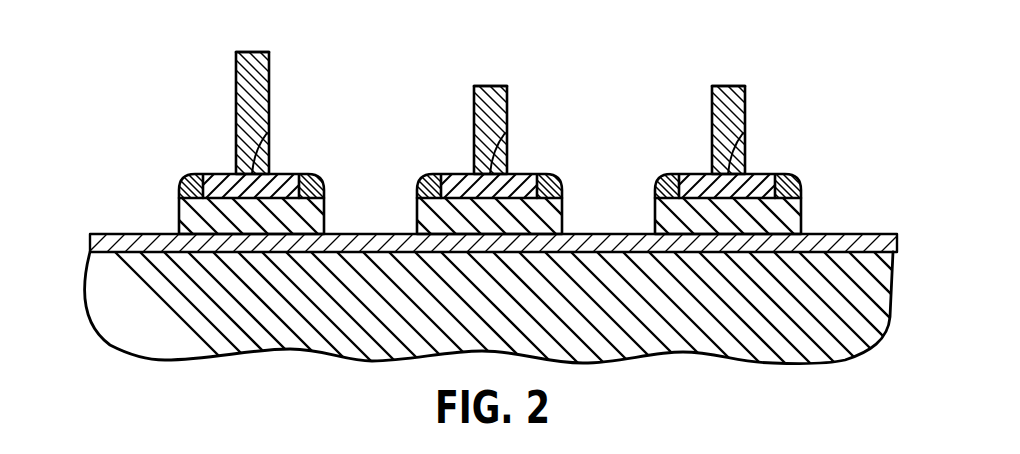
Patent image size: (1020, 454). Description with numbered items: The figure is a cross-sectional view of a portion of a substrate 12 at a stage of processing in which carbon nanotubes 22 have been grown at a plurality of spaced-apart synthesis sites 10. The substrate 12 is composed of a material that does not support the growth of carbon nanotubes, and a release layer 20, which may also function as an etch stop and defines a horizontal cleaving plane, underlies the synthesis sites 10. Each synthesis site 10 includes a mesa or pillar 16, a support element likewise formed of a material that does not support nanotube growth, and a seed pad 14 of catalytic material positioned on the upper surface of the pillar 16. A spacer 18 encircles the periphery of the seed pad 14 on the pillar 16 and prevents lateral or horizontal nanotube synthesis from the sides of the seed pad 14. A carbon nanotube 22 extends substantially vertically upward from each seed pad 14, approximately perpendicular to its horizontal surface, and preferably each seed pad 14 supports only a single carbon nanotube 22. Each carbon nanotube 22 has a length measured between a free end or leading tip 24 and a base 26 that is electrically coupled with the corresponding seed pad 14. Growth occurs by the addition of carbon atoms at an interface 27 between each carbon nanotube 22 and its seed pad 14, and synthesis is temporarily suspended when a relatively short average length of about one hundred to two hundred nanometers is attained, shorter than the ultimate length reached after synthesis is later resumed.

The synthesis site 10 is at (171, 187).
The substrate 12 is at (170, 358).
The seed pad 14 is at (217, 174).
The pillar 16 is at (325, 218).
The spacer 18 is at (323, 187).
The release layer 20 is at (90, 241).
The carbon nanotube 22 is at (269, 64).
The leading tip 24 is at (253, 52).
The base 26 is at (268, 171).
The interface 27 is at (268, 133).